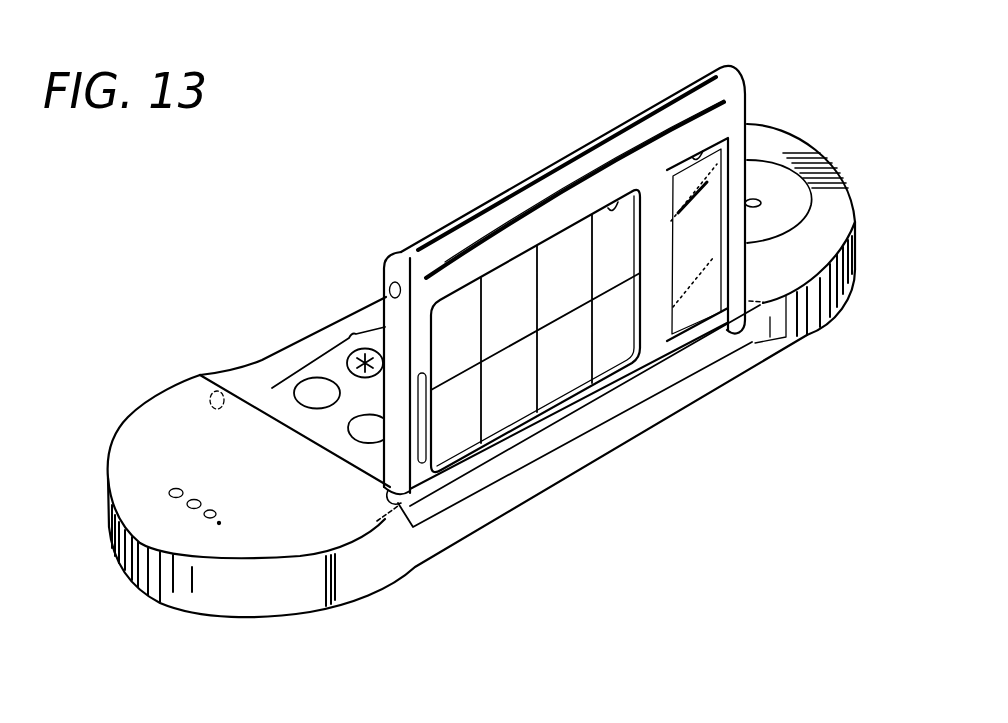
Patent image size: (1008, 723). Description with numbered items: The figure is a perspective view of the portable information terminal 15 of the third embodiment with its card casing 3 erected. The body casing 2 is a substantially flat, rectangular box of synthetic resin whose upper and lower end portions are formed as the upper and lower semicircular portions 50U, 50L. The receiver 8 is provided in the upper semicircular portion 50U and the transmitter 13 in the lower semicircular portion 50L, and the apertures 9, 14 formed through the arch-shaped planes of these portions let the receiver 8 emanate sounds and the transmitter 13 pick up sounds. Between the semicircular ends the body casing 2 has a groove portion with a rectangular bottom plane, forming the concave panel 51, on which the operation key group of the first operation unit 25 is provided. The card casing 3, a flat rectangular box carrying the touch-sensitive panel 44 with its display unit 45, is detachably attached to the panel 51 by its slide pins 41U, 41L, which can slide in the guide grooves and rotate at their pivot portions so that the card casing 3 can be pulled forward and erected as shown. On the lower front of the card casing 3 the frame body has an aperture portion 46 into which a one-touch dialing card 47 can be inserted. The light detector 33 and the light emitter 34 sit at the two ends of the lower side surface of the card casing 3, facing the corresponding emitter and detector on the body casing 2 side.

The portable information terminal 15 is at (267, 248).
The body casing 2 is at (805, 342).
The card casing 3 is at (592, 397).
The receiver 8 is at (763, 173).
The aperture 9 is at (762, 203).
The transmitter 13 is at (228, 533).
The aperture 14 is at (170, 492).
The first operation unit 25 is at (343, 330).
The light detector 33 is at (458, 465).
The light emitter 34 is at (410, 251).
The lower slide pin 41L is at (388, 504).
The upper slide pin 41U is at (852, 292).
The touch-sensitive panel 44 is at (697, 300).
The display unit 45 is at (699, 152).
The aperture portion 46 is at (616, 200).
The one-touch dialing card 47 is at (562, 248).
The lower semicircular portion 50L is at (146, 568).
The upper semicircular portion 50U is at (820, 160).
The panel 51 is at (257, 380).